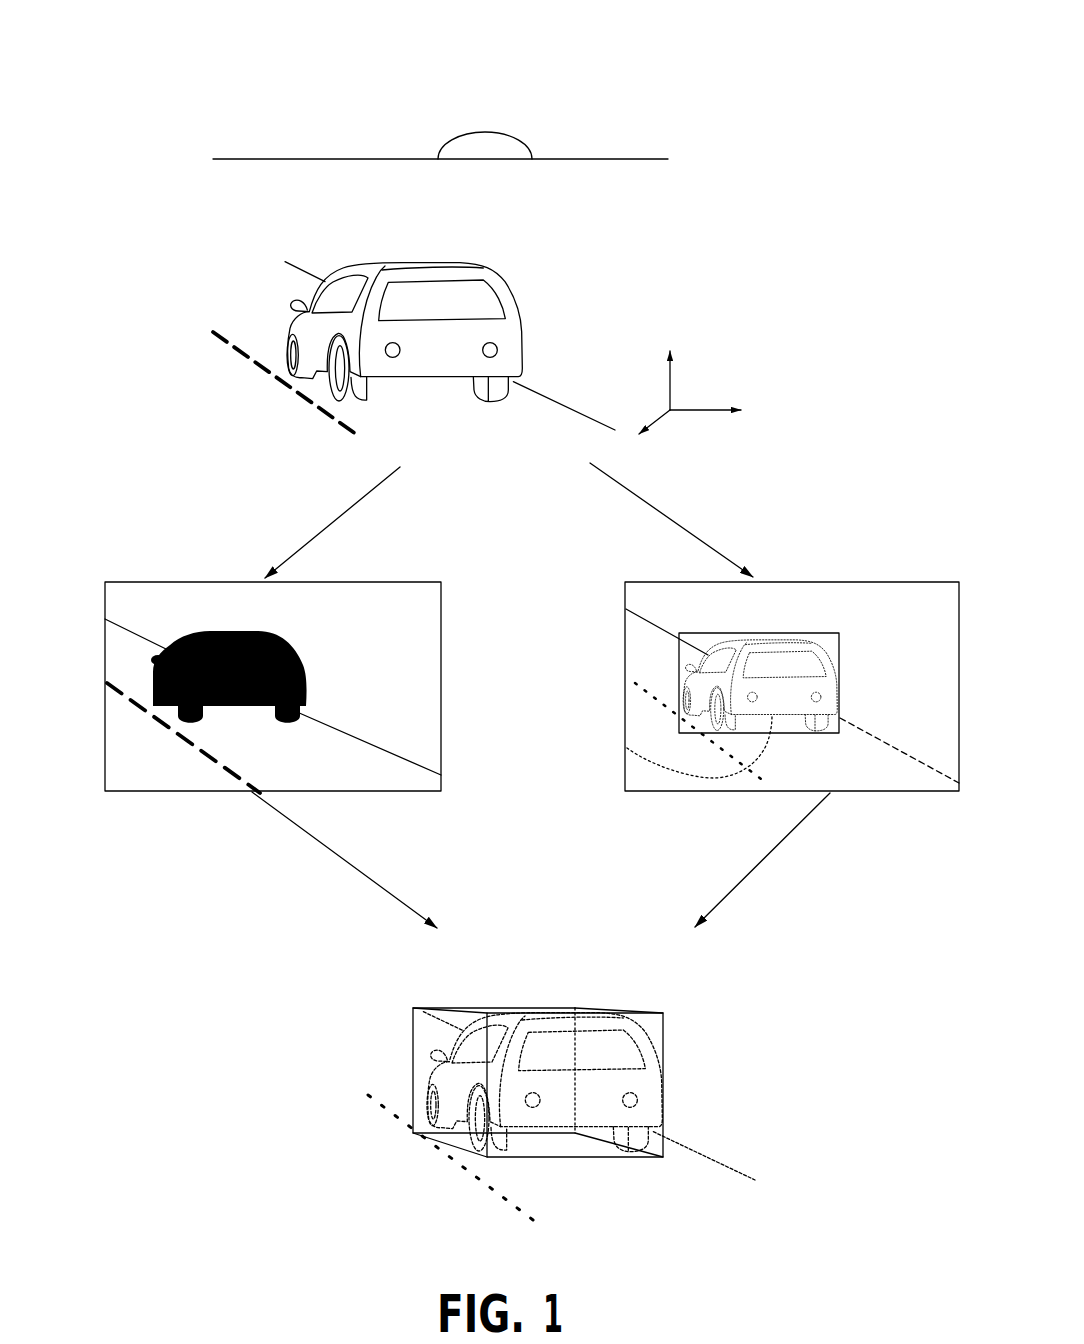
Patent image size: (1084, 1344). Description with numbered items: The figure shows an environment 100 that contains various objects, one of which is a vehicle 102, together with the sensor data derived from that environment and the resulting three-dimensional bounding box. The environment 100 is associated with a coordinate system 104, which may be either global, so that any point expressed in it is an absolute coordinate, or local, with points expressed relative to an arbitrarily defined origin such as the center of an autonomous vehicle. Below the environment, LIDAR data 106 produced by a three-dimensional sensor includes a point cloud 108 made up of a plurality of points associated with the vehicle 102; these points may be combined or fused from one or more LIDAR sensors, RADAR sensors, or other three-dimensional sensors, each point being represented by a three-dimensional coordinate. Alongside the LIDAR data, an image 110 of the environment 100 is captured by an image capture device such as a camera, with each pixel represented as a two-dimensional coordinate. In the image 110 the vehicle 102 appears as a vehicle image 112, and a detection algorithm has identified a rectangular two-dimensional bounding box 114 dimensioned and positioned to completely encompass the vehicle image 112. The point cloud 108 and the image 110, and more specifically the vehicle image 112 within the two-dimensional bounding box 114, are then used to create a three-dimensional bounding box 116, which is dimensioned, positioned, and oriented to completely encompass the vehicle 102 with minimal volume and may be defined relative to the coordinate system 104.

The environment 100 is at (759, 131).
The vehicle 102 is at (485, 298).
The coordinate system 104 is at (672, 396).
The LIDAR data 106 is at (146, 581).
The point cloud 108 is at (149, 731).
The image 110 is at (833, 585).
The vehicle image 112 is at (627, 748).
The two-dimensional bounding box 114 is at (750, 633).
The three-dimensional bounding box 116 is at (413, 1035).